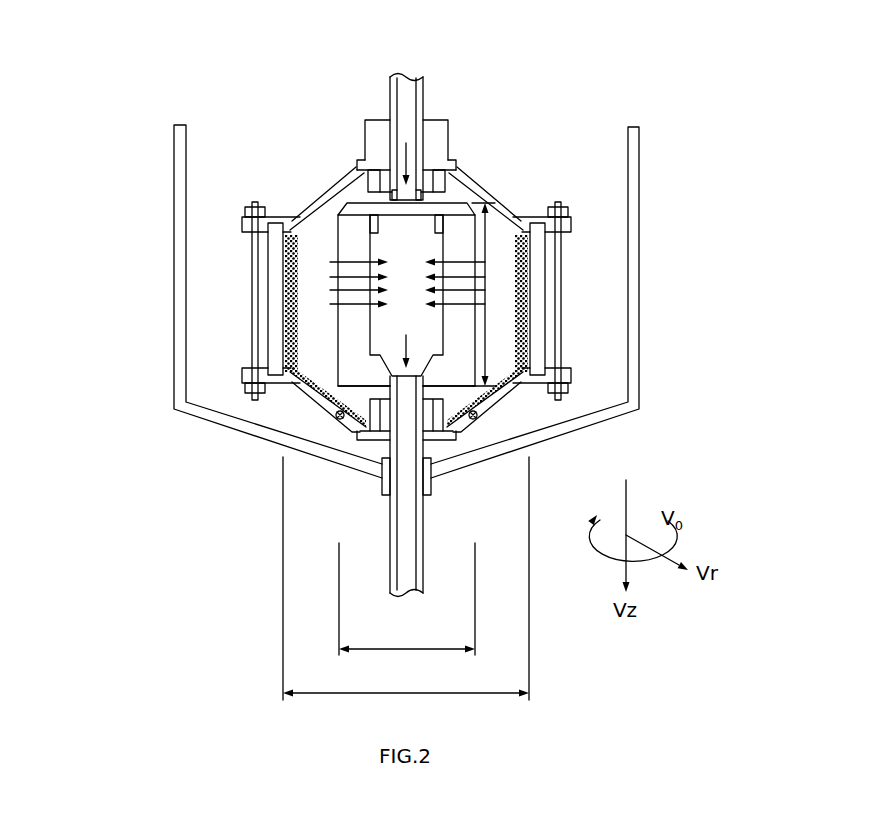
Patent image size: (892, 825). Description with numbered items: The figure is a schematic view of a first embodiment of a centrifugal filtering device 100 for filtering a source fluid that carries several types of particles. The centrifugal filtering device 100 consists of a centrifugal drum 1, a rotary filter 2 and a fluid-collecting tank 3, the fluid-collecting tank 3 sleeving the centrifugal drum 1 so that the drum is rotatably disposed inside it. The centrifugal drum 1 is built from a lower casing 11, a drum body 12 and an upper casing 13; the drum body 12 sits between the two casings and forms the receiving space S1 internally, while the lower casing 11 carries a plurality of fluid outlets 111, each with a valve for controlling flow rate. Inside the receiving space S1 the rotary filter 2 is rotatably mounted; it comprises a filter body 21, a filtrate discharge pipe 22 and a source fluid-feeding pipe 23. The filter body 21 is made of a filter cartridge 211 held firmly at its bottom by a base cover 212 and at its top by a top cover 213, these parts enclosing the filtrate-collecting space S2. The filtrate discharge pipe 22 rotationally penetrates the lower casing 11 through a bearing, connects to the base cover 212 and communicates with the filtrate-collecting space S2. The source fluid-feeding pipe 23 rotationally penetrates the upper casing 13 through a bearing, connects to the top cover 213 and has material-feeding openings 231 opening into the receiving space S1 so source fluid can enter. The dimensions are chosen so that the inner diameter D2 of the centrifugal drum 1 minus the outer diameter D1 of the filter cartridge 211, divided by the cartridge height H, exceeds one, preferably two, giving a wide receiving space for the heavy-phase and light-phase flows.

The centrifugal filtering device 100 is at (212, 91).
The centrifugal drum 1 is at (315, 178).
The lower casing 11 is at (300, 394).
The fluid outlet 111 is at (340, 429).
The drum body 12 is at (277, 300).
The upper casing 13 is at (298, 198).
The rotary filter 2 is at (444, 94).
The filter body 21 is at (703, 208).
The filter cartridge 211 is at (468, 247).
The base cover 212 is at (468, 388).
The top cover 213 is at (454, 208).
The filtrate discharge pipe 22 is at (423, 508).
The source fluid-feeding pipe 23 is at (389, 90).
The material-feeding opening 231 is at (390, 197).
The fluid-collecting tank 3 is at (658, 174).
The receiving space S1 is at (311, 277).
The filtrate-collecting space S2 is at (383, 323).
The height of the filter cartridge H is at (489, 294).
The outer diameter of the filter cartridge D1 is at (407, 599).
The inner diameter of the centrifugal drum D2 is at (406, 578).